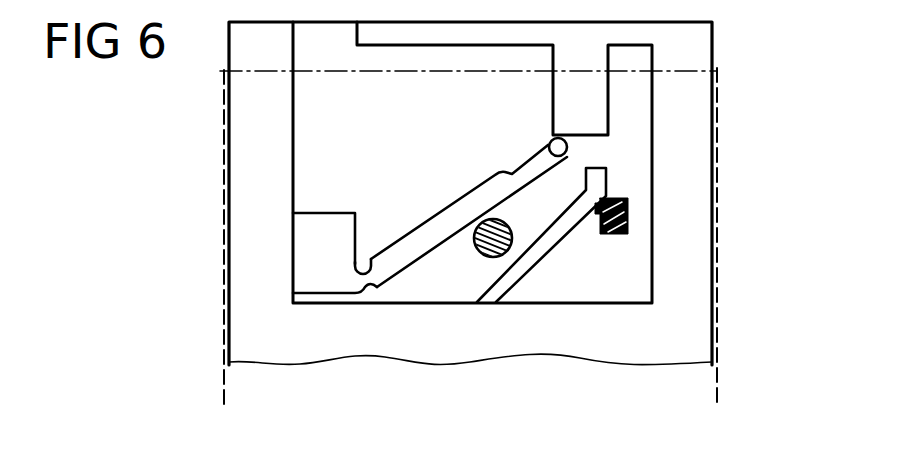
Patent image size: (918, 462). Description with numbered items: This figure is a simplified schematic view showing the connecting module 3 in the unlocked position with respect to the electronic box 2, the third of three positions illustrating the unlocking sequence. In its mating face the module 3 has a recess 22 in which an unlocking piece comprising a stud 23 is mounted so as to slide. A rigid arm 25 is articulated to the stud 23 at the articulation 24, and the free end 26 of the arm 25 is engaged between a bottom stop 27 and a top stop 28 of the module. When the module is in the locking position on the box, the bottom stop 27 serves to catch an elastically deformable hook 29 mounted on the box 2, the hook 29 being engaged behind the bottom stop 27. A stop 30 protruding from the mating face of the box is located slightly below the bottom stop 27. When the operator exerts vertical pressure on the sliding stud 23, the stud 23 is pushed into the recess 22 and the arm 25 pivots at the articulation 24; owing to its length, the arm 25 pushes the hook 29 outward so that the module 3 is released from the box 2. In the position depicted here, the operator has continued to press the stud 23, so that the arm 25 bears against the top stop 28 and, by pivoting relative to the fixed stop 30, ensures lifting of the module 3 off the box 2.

The electronic box 2 is at (720, 99).
The connecting module 3 is at (722, 54).
The recess 22 is at (330, 157).
The stud 23 is at (302, 252).
The articulation 24 is at (368, 262).
The rigid arm 25 is at (451, 227).
The free end 26 is at (567, 150).
The bottom stop 27 is at (597, 192).
The top stop 28 is at (593, 122).
The elastically deformable hook 29 is at (628, 210).
The stop 30 is at (488, 258).